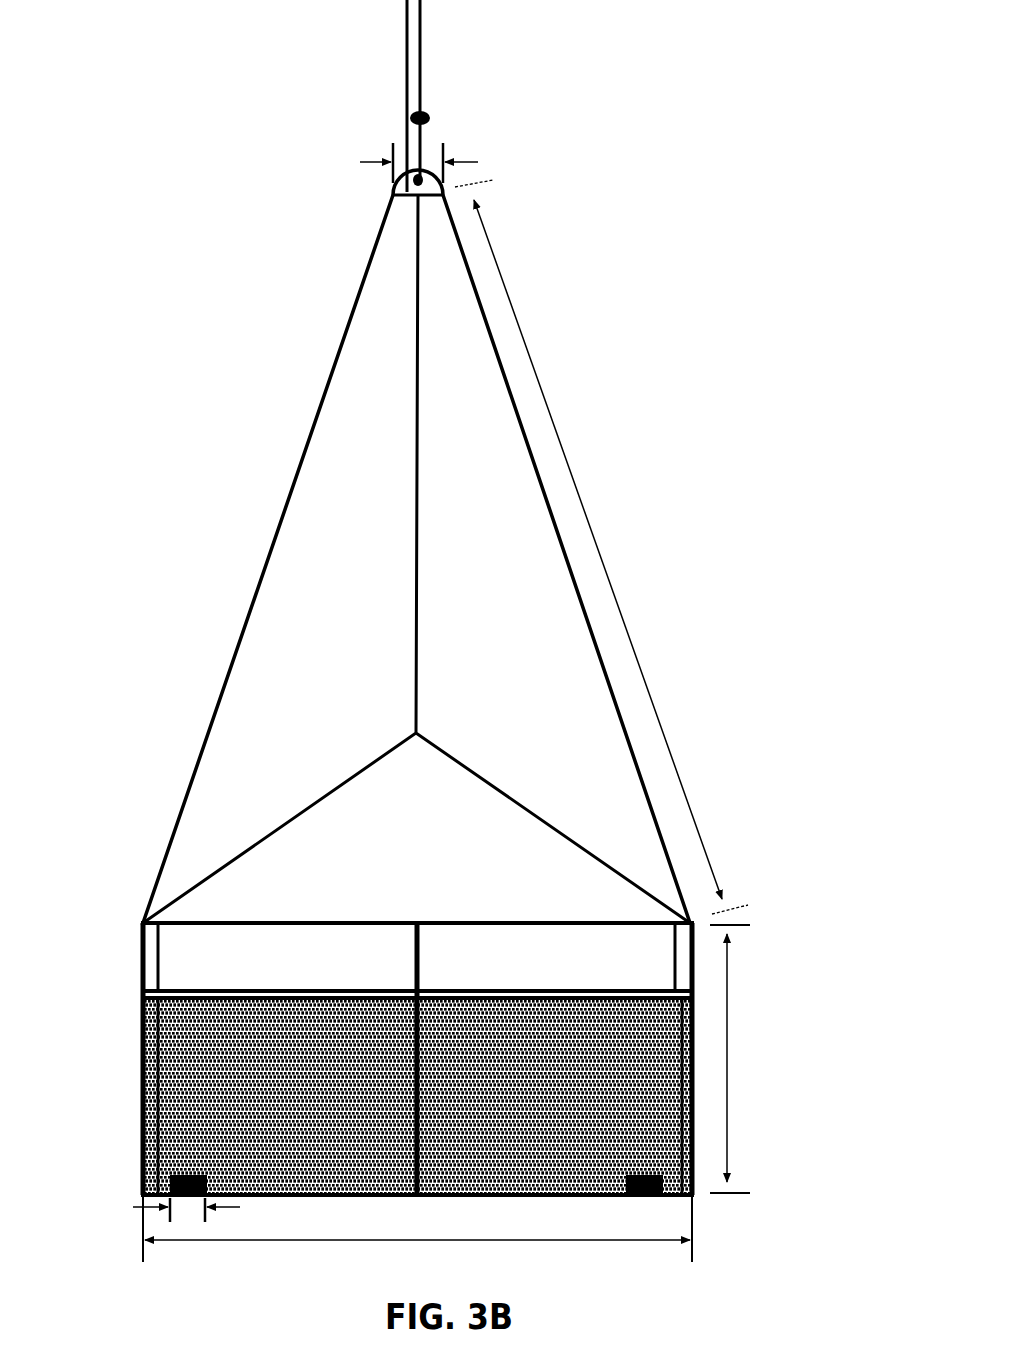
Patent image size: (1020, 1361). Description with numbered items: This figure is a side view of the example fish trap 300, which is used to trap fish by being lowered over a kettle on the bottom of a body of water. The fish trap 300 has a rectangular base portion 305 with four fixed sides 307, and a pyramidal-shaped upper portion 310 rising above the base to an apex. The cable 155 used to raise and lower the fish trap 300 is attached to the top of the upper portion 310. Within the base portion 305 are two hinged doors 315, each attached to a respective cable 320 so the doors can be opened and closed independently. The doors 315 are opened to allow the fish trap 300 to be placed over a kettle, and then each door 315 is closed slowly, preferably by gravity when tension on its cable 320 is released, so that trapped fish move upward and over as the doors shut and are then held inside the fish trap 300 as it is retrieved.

The fish trap 300 is at (668, 152).
The cable 155 is at (421, 57).
The cable 320 is at (407, 82).
The upper portion 310 is at (593, 300).
The base portion 305 is at (787, 1052).
The fixed sides 307 is at (142, 962).
The hinged doors 315 is at (158, 1057).